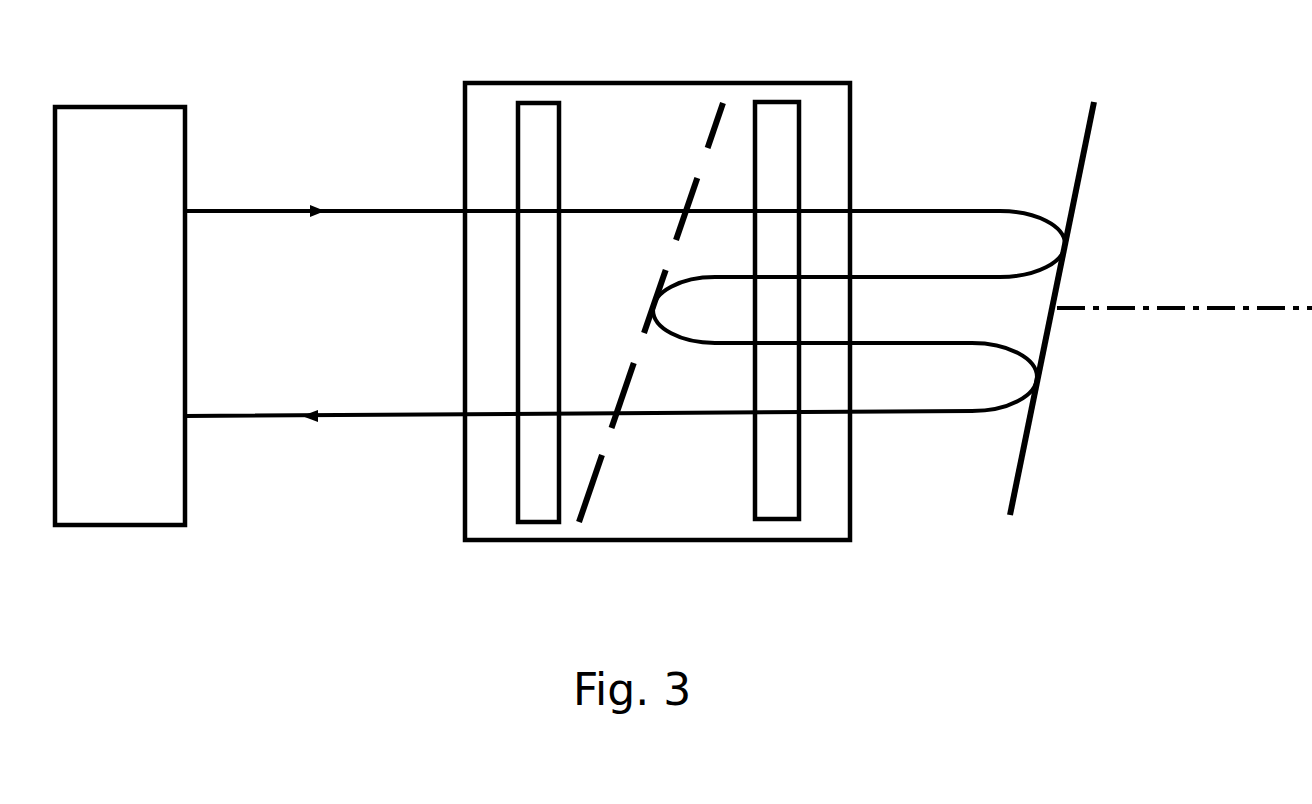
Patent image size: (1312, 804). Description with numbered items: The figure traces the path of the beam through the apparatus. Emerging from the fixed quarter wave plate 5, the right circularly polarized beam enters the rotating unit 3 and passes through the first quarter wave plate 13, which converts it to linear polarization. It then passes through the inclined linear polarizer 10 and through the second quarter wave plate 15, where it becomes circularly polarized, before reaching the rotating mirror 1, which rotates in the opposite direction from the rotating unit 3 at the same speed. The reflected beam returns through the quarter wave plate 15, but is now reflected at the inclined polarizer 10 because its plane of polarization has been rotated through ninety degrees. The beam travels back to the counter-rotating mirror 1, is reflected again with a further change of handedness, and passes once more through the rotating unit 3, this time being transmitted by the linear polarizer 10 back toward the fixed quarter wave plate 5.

The rotating mirror 1 is at (1087, 150).
The rotating unit 3 is at (644, 83).
The fixed quarter wave plate 5 is at (113, 107).
The linear polarizer 10 is at (590, 488).
The first quarter wave plate 13 is at (538, 522).
The second quarter wave plate 15 is at (777, 519).